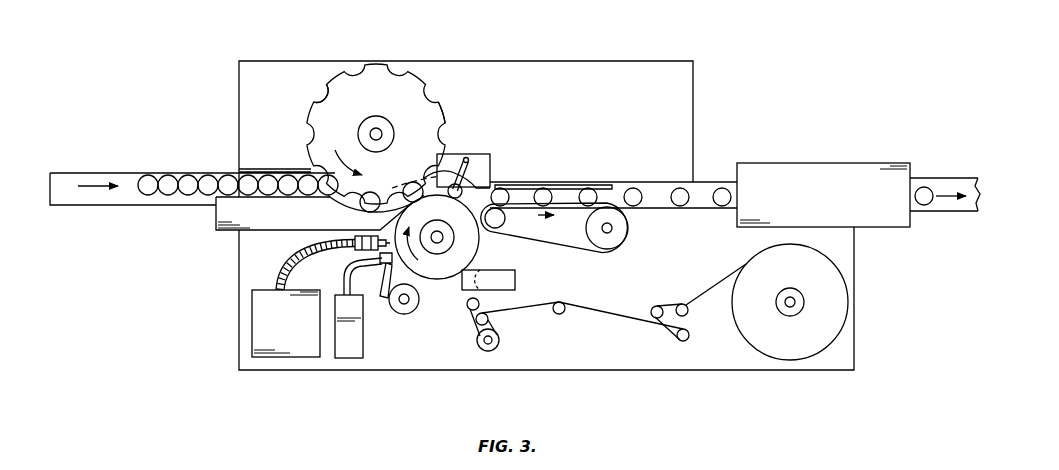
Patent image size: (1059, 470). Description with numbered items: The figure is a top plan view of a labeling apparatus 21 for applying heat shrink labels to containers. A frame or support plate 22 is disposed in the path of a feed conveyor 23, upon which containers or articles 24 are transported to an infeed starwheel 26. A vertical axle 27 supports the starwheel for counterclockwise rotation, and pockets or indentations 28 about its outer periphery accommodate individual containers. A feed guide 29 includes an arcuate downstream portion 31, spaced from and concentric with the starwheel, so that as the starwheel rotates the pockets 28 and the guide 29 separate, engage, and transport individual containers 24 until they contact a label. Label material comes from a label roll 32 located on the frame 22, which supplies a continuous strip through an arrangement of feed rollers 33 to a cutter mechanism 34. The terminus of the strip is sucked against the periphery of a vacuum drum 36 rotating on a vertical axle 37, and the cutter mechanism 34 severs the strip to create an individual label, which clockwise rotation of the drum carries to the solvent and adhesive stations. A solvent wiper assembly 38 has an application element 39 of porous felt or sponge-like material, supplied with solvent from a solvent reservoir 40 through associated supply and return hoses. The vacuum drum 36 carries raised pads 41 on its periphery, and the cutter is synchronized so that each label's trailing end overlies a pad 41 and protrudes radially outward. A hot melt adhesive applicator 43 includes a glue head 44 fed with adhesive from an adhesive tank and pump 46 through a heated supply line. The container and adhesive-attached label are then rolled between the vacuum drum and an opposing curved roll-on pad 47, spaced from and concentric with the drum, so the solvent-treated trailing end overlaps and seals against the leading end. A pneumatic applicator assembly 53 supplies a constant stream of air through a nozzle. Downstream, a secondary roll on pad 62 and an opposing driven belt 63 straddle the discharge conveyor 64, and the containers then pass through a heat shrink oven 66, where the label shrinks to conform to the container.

The labeling apparatus 21 is at (718, 38).
The frame or support plate 22 is at (600, 120).
The feed conveyor 23 is at (178, 208).
The containers or articles 24 is at (207, 176).
The infeed starwheel 26 is at (393, 78).
The vertical axle 27 is at (384, 132).
The pockets or indentations 28 is at (322, 110).
The feed guide 29 is at (218, 234).
The arcuate downstream portion 31 is at (334, 202).
The label roll 32 is at (801, 354).
The feed rollers 33 is at (495, 341).
The cutter mechanism 34 is at (517, 280).
The vacuum drum 36 is at (474, 239).
The vertical axle 37 is at (442, 243).
The solvent wiper assembly 38 is at (405, 320).
The application element 39 is at (372, 256).
The solvent reservoir 40 is at (350, 357).
The raised pads 41 is at (417, 286).
The hot melt adhesive applicator 43 is at (236, 325).
The glue head 44 is at (376, 238).
The adhesive tank and associated pump 46 is at (271, 358).
The curved roll-on pad 47 is at (482, 178).
The pneumatic applicator assembly 53 is at (466, 160).
The secondary roll on pad 62 is at (548, 184).
The driven belt 63 is at (631, 246).
The discharge conveyor 64 is at (650, 181).
The heat shrink oven 66 is at (807, 176).